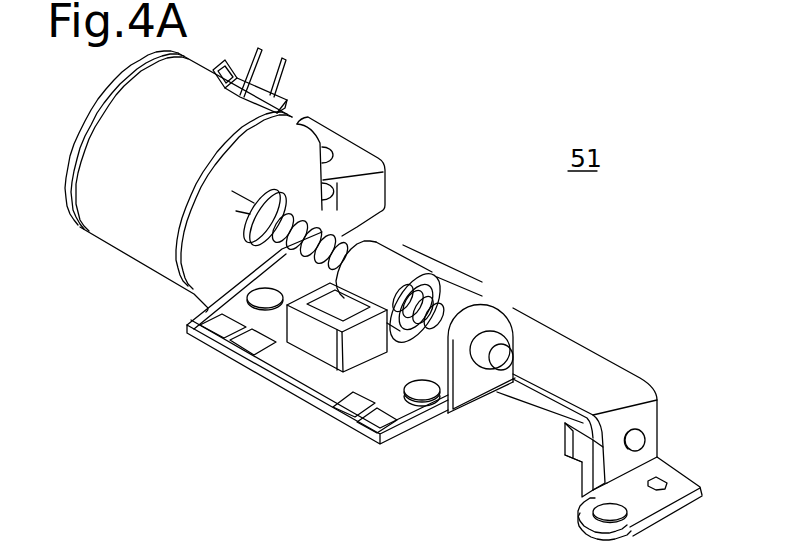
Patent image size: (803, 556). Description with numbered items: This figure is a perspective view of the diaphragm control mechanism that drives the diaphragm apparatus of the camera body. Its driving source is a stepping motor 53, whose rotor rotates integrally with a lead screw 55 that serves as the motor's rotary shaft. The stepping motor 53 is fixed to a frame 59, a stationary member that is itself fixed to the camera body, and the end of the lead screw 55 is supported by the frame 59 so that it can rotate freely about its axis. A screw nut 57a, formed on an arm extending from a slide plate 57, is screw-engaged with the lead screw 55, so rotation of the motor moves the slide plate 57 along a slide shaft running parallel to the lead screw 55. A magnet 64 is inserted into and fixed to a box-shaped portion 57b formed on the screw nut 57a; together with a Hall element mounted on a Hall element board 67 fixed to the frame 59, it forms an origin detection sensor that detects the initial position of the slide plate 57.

The stepping motor 53 is at (120, 250).
The lead screw 55 is at (350, 234).
The slide plate 57 is at (535, 422).
The screw nut 57a is at (413, 265).
The box-shaped portion 57b is at (480, 300).
The frame 59 is at (590, 387).
The magnet 64 is at (330, 333).
The Hall element board 67 is at (403, 430).